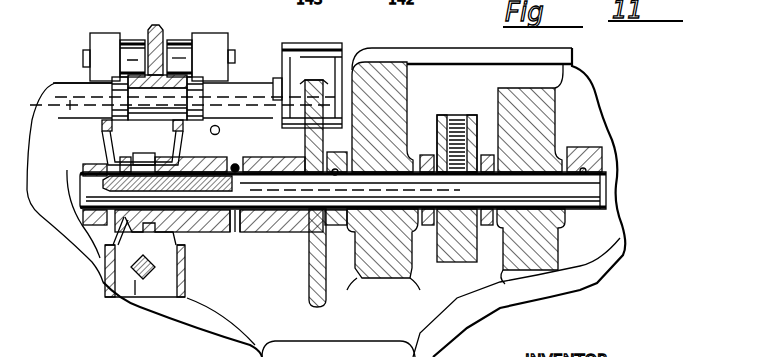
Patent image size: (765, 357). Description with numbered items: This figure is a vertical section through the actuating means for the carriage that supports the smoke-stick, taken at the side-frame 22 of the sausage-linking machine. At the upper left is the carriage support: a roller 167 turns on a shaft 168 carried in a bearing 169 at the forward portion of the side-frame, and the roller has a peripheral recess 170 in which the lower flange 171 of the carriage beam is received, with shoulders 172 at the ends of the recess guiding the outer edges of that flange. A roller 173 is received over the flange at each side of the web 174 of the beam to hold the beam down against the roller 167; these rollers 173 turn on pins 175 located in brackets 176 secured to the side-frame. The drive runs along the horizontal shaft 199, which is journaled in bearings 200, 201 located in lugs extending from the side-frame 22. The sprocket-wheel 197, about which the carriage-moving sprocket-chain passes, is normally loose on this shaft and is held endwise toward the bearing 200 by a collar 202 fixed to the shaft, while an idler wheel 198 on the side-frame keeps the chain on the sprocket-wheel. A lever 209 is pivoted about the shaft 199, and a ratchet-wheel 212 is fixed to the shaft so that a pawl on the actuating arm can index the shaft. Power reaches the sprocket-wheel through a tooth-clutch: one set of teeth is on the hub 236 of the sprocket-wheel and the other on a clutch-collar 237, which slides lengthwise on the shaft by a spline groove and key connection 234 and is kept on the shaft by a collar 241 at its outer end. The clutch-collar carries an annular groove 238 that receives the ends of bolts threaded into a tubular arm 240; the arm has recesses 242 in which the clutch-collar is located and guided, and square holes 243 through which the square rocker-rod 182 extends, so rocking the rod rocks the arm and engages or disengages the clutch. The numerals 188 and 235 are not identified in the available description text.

The side-frame 22 is at (448, 300).
The roller 167 is at (152, 112).
The shaft 168 is at (173, 25).
The bearing 169 is at (48, 110).
The peripheral recess 170 is at (163, 117).
The lower flange 171 is at (178, 60).
The shoulder 172 is at (110, 107).
The roller 173 is at (123, 45).
The web 174 is at (147, 30).
The pin 175 is at (88, 48).
The bracket 176 is at (103, 40).
The rocker-rod 182 is at (143, 272).
The shaft 188 is at (70, 100).
The sprocket-wheel 197 is at (311, 290).
The idler wheel 198 is at (318, 43).
The shaft 199 is at (607, 193).
The bearing 200 is at (395, 170).
The bearing 201 is at (533, 163).
The collar 202 is at (234, 163).
The lever 209 is at (430, 153).
The ratchet-wheel 212 is at (470, 115).
The spline groove and key connection 234 is at (105, 167).
The spacer 235 is at (236, 233).
The hub 236 is at (268, 230).
The clutch-collar 237 is at (175, 232).
The annular groove 238 is at (143, 232).
The arm 240 is at (125, 297).
The collar 241 is at (110, 237).
The recess 242 is at (178, 158).
The square hole 243 is at (153, 280).